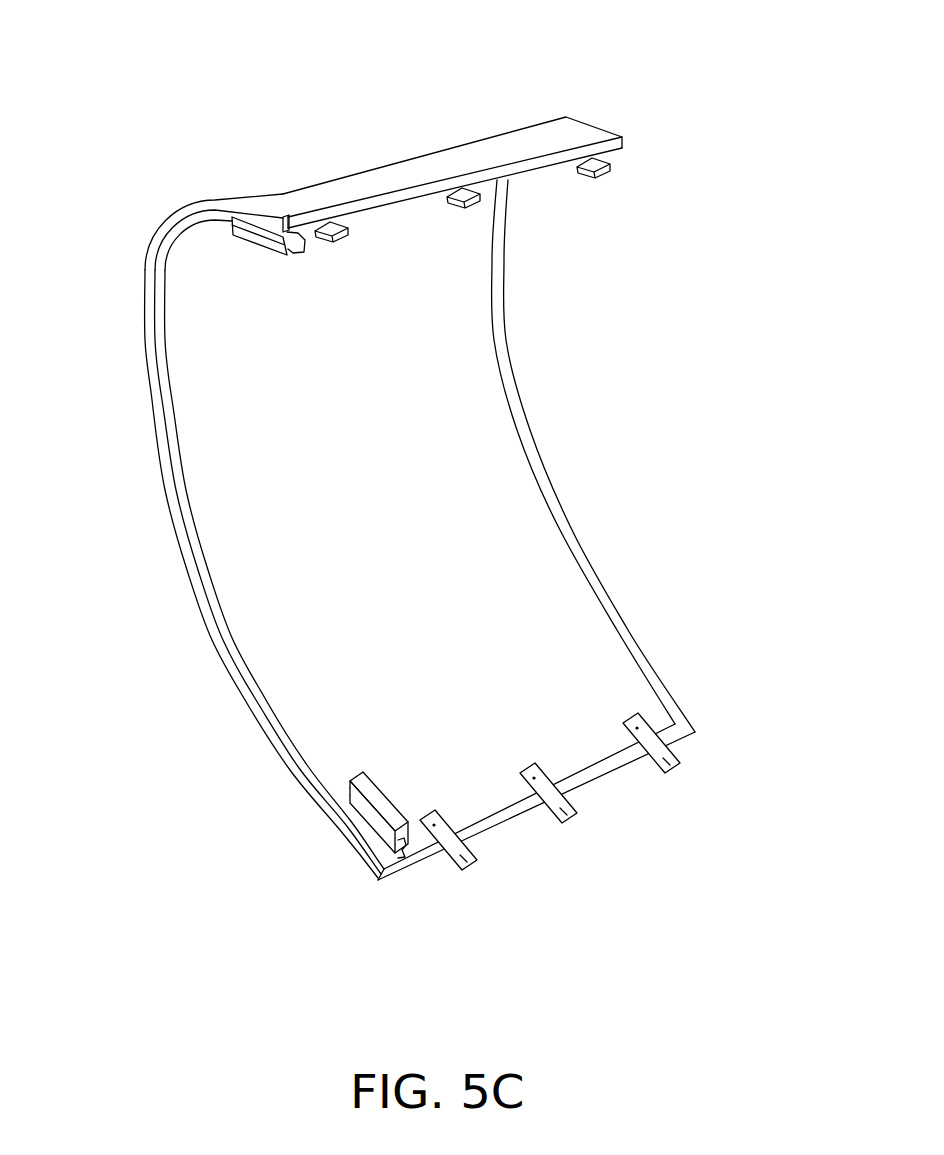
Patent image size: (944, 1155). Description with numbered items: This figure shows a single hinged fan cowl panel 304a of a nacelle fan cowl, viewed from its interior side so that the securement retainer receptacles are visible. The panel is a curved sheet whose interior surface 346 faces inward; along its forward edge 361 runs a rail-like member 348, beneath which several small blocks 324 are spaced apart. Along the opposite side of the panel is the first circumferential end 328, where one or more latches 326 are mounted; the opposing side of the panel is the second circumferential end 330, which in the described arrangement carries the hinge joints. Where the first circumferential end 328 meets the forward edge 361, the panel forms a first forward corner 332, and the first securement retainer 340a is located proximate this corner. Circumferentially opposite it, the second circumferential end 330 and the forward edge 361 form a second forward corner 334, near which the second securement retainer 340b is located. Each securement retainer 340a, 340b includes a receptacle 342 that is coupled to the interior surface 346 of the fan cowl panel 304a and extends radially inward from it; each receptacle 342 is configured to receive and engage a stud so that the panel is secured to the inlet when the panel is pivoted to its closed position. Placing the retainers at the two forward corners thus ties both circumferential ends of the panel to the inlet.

The fan cowl panel 304a is at (236, 79).
The mounting blocks 324 is at (602, 166).
The latches 326 is at (465, 866).
The first circumferential end 328 is at (597, 780).
The second circumferential end 330 is at (528, 166).
The first forward corner 332 is at (380, 880).
The second forward corner 334 is at (284, 216).
The first securement retainer 340a is at (350, 821).
The second securement retainer 340b is at (206, 226).
The receptacle 342 is at (253, 230).
The interior surface 346 is at (409, 432).
The top rail 348 is at (391, 162).
The forward edge 361 is at (186, 571).